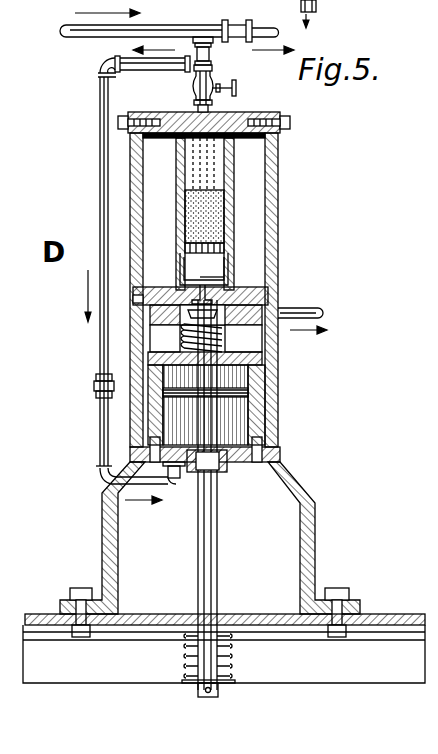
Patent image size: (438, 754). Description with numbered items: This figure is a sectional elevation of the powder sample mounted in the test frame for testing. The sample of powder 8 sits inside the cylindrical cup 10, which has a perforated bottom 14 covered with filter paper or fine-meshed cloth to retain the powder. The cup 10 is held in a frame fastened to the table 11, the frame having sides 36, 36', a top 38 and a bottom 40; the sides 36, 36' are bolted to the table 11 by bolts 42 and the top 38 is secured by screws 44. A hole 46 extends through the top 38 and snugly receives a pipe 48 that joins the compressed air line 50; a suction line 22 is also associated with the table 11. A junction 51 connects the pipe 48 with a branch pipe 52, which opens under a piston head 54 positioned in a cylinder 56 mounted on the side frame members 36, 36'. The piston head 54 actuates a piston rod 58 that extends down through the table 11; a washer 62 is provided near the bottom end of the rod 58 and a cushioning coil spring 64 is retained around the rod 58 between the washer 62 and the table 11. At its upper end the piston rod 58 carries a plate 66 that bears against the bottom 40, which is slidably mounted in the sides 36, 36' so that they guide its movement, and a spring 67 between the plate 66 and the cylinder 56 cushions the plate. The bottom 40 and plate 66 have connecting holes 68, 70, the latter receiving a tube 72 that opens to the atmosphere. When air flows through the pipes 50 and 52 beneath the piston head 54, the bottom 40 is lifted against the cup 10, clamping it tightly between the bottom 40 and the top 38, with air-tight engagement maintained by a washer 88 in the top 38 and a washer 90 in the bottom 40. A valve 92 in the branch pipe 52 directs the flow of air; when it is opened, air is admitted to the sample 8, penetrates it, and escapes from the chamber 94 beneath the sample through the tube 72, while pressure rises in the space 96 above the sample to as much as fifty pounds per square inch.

The sample of powder 8 is at (226, 220).
The cylindrical cup 10 is at (183, 198).
The table 11 is at (375, 620).
The perforated bottom 14 is at (226, 258).
The suction line 22 is at (318, 6).
The frame side 36 is at (205, 373).
The frame side 36' is at (308, 229).
The top 38 is at (240, 112).
The bottom 40 is at (270, 301).
The bolts 42 is at (82, 590).
The screws 44 is at (120, 122).
The hole 46 is at (143, 137).
The pipe 48 is at (213, 54).
The compressed air line 50 is at (78, 35).
The junction 51 is at (197, 57).
The branch pipe 52 is at (100, 360).
The piston head 54 is at (240, 410).
The cylinder 56 is at (265, 424).
The piston rod 58 is at (217, 540).
The washer 62 is at (235, 675).
The cushioning coil spring 64 is at (184, 657).
The plate 66 is at (262, 336).
The spring 67 is at (262, 358).
The connecting hole 68 is at (142, 300).
The connecting hole 70 is at (206, 328).
The tube 72 is at (322, 312).
The washer 88 is at (262, 150).
The washer 90 is at (236, 295).
The valve 92 is at (190, 88).
The chamber 94 is at (200, 268).
The space 96 is at (212, 172).